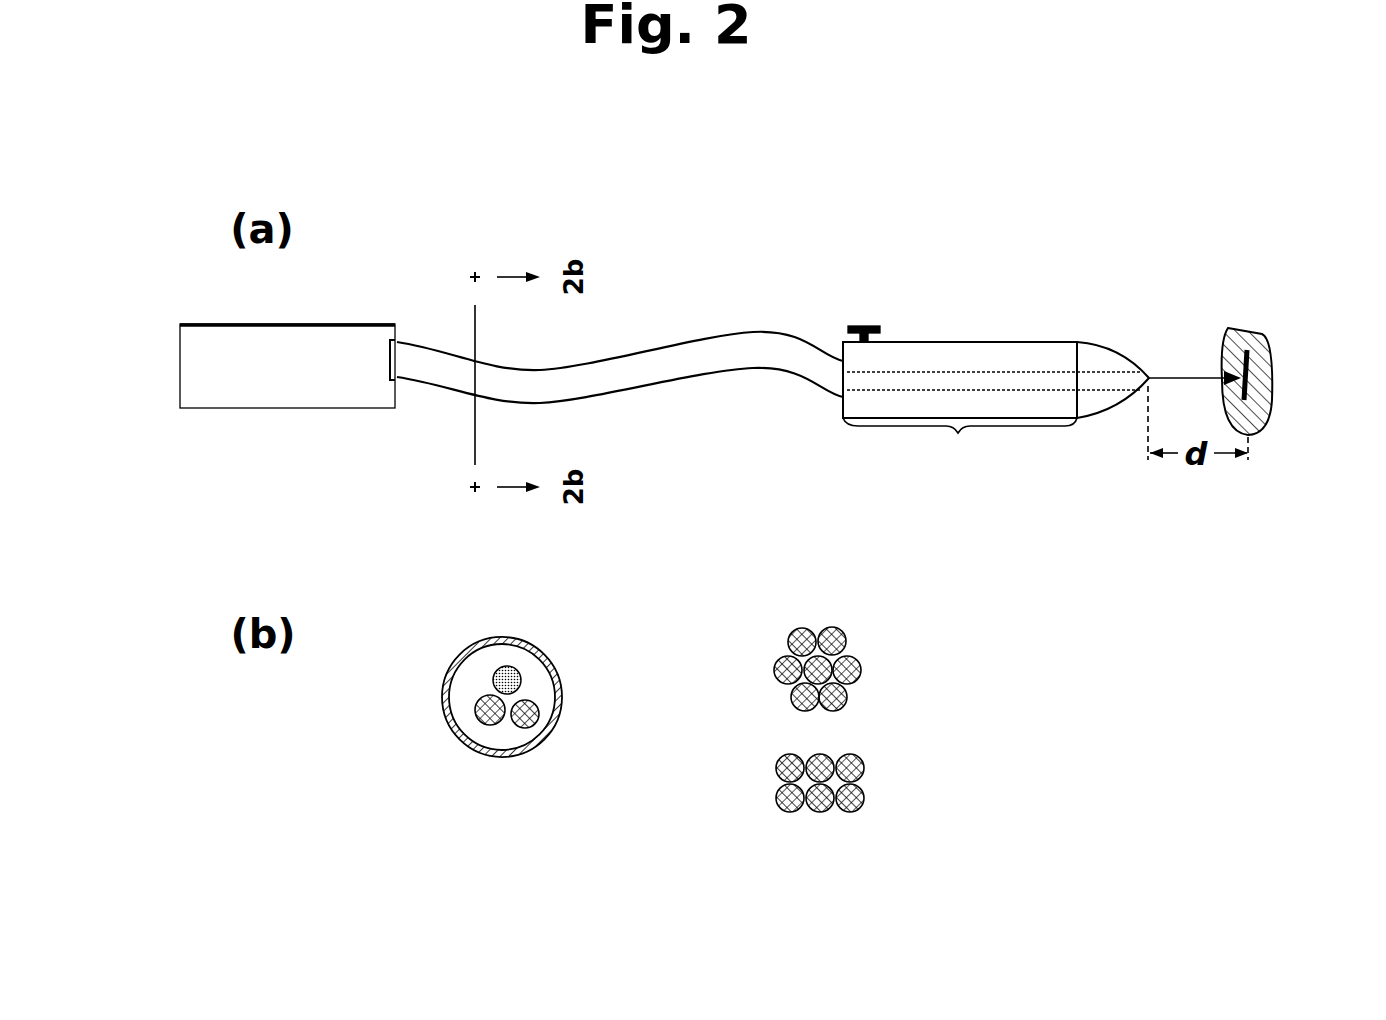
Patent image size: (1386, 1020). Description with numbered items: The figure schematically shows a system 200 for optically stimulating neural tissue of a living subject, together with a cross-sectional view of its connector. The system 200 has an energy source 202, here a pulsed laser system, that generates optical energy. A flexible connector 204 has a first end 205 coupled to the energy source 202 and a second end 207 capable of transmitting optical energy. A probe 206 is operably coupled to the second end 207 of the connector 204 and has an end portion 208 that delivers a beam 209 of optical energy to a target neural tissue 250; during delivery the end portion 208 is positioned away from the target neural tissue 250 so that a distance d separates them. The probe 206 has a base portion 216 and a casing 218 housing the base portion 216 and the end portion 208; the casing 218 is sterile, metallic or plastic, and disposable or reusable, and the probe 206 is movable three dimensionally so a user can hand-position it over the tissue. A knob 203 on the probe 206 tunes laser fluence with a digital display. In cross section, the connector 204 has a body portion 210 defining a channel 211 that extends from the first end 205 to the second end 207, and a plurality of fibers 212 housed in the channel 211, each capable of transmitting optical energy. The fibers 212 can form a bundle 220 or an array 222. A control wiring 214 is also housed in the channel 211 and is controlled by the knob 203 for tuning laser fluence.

In FIG. 2a, the system 200 is at (752, 245).
In FIG. 2a, the energy source 202 is at (290, 408).
In FIG. 2a, the knob 203 is at (864, 326).
In FIG. 2a, the connector 204 is at (653, 366).
In FIG. 2a, the first end 205 is at (388, 382).
In FIG. 2a, the probe 206 is at (1024, 378).
In FIG. 2a, the second end 207 is at (846, 418).
In FIG. 2a, the end portion 208 is at (1148, 376).
In FIG. 2a, the beam 209 is at (1200, 374).
In FIG. 2b, the body portion 210 is at (562, 707).
In FIG. 2b, the channel 211 is at (533, 683).
In FIG. 2b, the plurality of fibers 212 is at (495, 722).
In FIG. 2b, the control wiring 214 is at (495, 675).
In FIG. 2a, the base portion 216 is at (958, 433).
In FIG. 2a, the casing 218 is at (916, 342).
In FIG. 2b, the bundle 220 is at (873, 670).
In FIG. 2b, the array 222 is at (872, 780).
In FIG. 2a, the target neural tissue 250 is at (1258, 348).